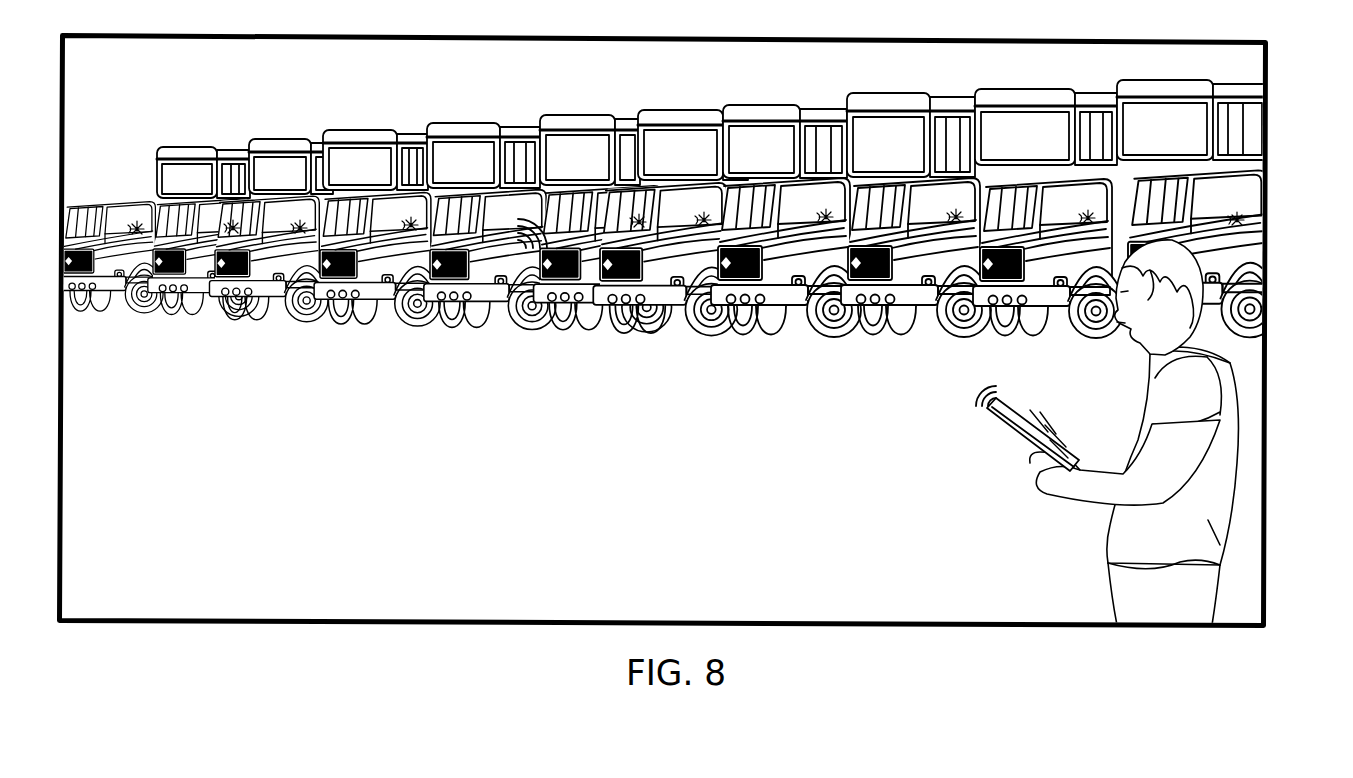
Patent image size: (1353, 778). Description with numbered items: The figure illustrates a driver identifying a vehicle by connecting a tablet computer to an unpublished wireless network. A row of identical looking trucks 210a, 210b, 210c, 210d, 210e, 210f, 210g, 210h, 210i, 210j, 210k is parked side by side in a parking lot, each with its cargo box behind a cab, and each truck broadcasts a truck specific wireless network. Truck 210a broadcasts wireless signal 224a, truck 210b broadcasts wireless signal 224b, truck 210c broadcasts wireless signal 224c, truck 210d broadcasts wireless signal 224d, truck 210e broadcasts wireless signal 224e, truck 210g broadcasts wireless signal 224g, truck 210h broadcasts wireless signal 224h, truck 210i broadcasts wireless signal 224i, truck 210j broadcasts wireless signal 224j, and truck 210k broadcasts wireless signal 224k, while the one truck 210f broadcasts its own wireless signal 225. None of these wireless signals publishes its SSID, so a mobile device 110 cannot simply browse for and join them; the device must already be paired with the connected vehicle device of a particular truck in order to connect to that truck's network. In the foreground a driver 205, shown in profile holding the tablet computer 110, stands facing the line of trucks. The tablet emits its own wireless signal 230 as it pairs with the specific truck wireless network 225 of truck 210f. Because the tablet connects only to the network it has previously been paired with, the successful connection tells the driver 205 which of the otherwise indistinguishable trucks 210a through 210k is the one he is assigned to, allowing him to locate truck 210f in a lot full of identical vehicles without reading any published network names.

The mobile device 110 is at (1006, 426).
The driver 205 is at (1150, 385).
The truck 210a is at (1172, 80).
The truck 210b is at (1040, 89).
The truck 210c is at (904, 93).
The truck 210d is at (784, 105).
The truck 210e is at (692, 110).
The truck 210f is at (594, 115).
The truck 210g is at (477, 123).
The truck 210h is at (377, 130).
The truck 210i is at (282, 139).
The truck 210j is at (196, 146).
The truck 210k is at (1263, 180).
The wireless signal 224a is at (1068, 182).
The wireless signal 224b is at (933, 184).
The wireless signal 224c is at (798, 186).
The wireless signal 224d is at (678, 193).
The wireless signal 224e is at (618, 198).
The wireless signal 224g is at (383, 200).
The wireless signal 224h is at (281, 204).
The wireless signal 224i is at (208, 204).
The wireless signal 224j is at (127, 225).
The wireless signal 224k is at (1255, 215).
The wireless signal 225 is at (514, 222).
The wireless signal from mobile device 230 is at (973, 398).